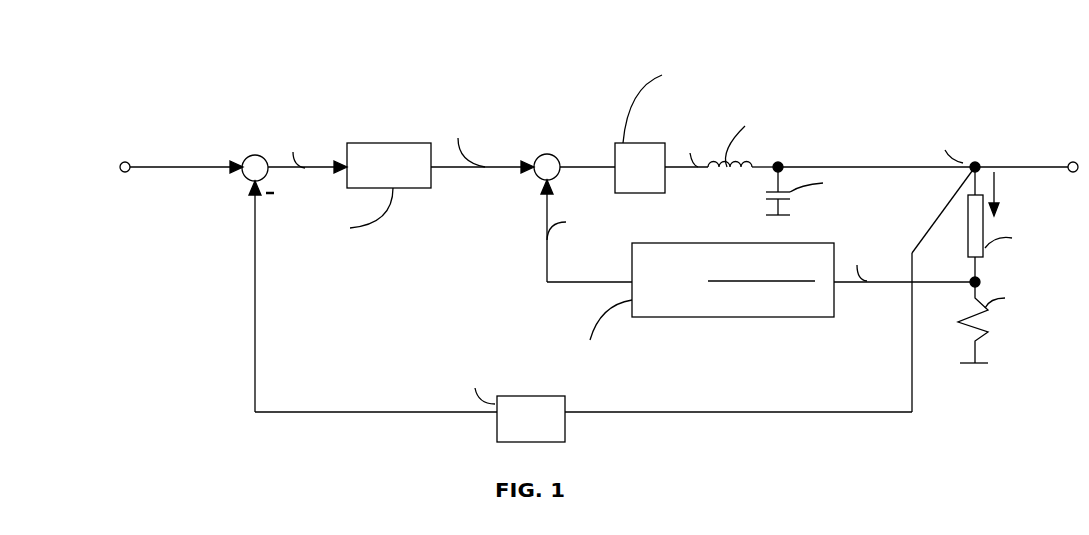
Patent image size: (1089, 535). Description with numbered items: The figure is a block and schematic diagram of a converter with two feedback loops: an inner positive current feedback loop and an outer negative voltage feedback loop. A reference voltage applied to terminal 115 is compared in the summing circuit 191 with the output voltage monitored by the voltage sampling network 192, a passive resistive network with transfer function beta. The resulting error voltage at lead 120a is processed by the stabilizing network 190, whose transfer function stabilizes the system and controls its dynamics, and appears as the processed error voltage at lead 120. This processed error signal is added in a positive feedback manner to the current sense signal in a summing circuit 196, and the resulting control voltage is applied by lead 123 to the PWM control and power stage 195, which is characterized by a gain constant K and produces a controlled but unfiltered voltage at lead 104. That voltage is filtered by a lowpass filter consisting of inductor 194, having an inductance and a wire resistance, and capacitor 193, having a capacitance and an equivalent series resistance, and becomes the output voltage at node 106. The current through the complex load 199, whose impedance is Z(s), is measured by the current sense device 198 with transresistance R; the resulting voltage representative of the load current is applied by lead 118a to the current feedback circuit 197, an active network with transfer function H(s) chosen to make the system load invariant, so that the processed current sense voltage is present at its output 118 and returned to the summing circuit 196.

The terminal 115 is at (129, 162).
The summing circuit 191 is at (246, 177).
The lead 120a is at (311, 170).
The stabilizing network 190 is at (384, 143).
The lead 120 is at (466, 169).
The summing circuit 196 is at (537, 176).
The PWM control and power stage 195 is at (613, 151).
The lead 123 is at (600, 171).
The lead 104 is at (699, 167).
The inductor 194 is at (727, 167).
The capacitor 193 is at (790, 205).
The node 106 is at (980, 163).
The complex load 199 is at (983, 258).
The current sense device 198 is at (985, 322).
The output 118 is at (547, 255).
The current feedback circuit 197 is at (632, 287).
The lead 118a is at (885, 285).
The voltage sampling network 192 is at (566, 430).